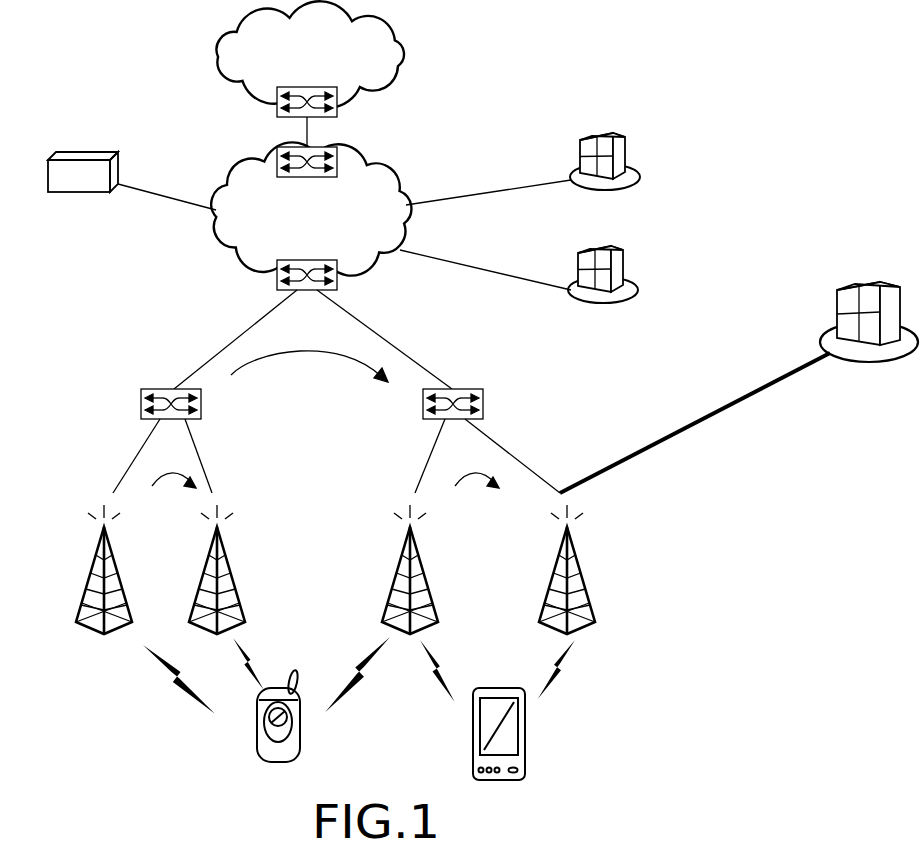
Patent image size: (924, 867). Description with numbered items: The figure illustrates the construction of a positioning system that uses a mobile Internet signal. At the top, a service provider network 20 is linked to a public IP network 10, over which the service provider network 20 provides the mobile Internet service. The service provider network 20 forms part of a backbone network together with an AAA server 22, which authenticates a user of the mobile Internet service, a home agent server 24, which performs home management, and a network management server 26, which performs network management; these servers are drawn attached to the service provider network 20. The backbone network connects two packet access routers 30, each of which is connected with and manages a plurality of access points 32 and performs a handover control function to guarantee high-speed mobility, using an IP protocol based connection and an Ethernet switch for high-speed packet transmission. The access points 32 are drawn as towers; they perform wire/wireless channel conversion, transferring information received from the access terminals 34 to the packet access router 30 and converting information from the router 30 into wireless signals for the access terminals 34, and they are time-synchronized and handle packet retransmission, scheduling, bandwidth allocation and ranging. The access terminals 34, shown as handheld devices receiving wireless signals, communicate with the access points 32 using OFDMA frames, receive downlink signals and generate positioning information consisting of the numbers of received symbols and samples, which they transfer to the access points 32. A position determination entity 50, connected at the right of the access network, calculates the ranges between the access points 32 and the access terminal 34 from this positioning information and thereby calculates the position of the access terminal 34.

The public IP network 10 is at (408, 62).
The service provider network 20 is at (350, 171).
The authorization, authentication and accounting (AAA) server 22 is at (88, 152).
The home agent (HA) server 24 is at (598, 133).
The network management server 26 is at (597, 247).
The packet access router (PAR) 30 is at (141, 403).
The access point (AP) 32 is at (122, 585).
The access terminal (AT) 34 is at (300, 718).
The position determination entity (PDE) 50 is at (858, 282).